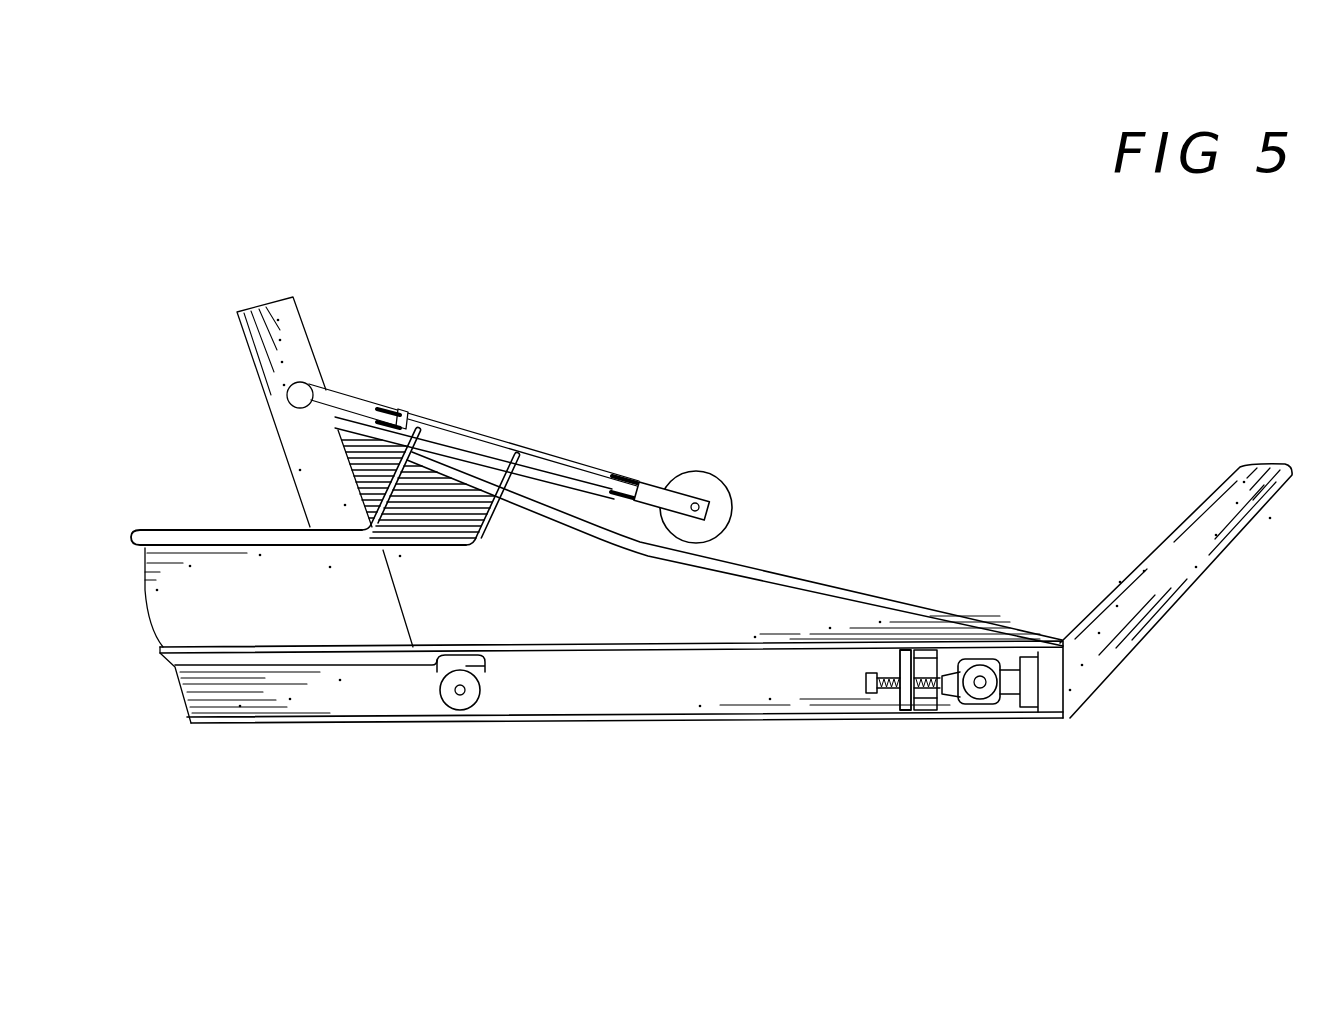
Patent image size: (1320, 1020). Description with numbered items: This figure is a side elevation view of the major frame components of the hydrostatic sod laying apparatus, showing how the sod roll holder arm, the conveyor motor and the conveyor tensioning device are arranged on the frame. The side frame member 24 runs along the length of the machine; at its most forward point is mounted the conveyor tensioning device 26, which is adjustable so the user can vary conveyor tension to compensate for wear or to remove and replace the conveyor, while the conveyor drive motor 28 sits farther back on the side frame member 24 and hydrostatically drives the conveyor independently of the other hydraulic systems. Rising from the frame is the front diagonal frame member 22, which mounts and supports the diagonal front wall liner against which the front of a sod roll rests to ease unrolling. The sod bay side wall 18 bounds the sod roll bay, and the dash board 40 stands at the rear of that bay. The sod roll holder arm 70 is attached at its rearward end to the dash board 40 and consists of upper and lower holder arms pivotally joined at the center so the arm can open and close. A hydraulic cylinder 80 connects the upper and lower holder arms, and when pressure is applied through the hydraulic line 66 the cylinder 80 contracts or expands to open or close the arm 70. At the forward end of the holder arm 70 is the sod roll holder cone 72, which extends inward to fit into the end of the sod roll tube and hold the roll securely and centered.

The sod bay side wall 18 is at (616, 616).
The front diagonal frame member 22 is at (1178, 510).
The side frame member 24 is at (421, 732).
The conveyor tensioning device 26 is at (953, 700).
The conveyor drive motor 28 is at (470, 697).
The dash board 40 is at (295, 292).
The hydraulic line 66 is at (174, 518).
The sod roll holder arm 70 is at (560, 444).
The sod roll holder cone 72 is at (689, 460).
The hydraulic cylinder 80 is at (482, 444).